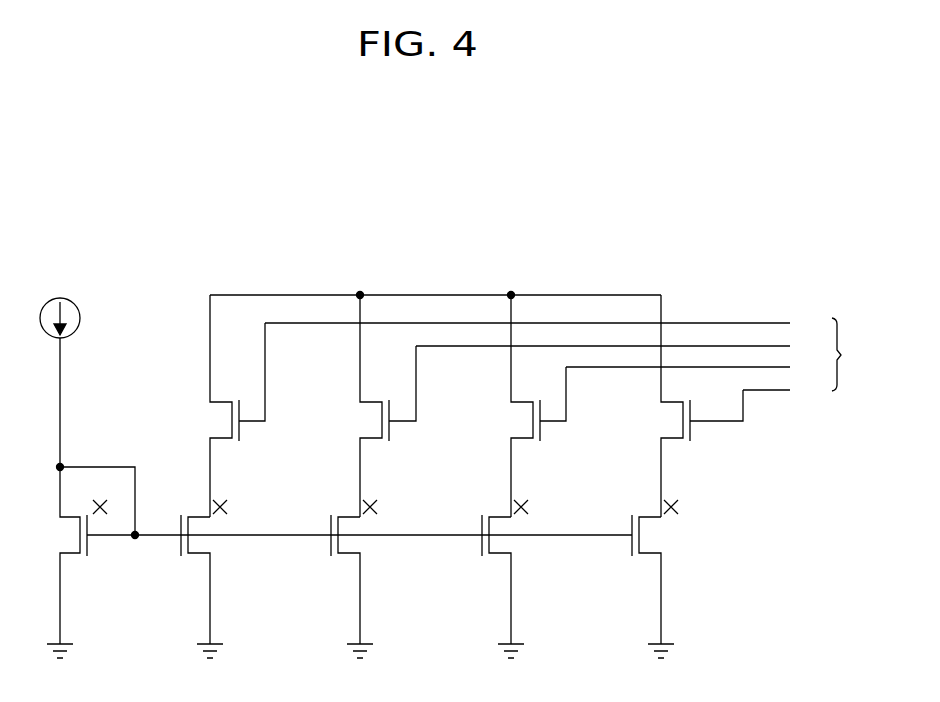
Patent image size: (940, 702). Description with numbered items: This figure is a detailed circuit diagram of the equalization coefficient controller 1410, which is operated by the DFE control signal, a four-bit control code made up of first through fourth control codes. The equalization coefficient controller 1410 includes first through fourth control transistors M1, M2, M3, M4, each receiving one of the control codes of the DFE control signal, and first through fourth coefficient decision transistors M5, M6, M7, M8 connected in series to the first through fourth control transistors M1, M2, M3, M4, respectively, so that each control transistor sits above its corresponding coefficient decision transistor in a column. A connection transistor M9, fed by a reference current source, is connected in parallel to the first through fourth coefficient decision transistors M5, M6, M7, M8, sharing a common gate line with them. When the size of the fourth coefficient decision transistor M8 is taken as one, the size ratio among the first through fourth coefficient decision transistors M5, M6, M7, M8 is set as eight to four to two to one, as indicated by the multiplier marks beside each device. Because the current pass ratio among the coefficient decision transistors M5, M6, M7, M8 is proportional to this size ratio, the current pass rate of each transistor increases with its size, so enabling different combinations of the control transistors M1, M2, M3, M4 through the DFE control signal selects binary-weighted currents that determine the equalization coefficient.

The equalization coefficient controller 1410 is at (461, 203).
The first control transistor M1 is at (687, 406).
The second control transistor M2 is at (524, 406).
The third control transistor M3 is at (373, 406).
The fourth control transistor M4 is at (223, 406).
The first coefficient decision transistor M5 is at (663, 578).
The second coefficient decision transistor M6 is at (513, 578).
The third coefficient decision transistor M7 is at (362, 578).
The fourth coefficient decision transistor M8 is at (212, 578).
The connection transistor M9 is at (82, 498).